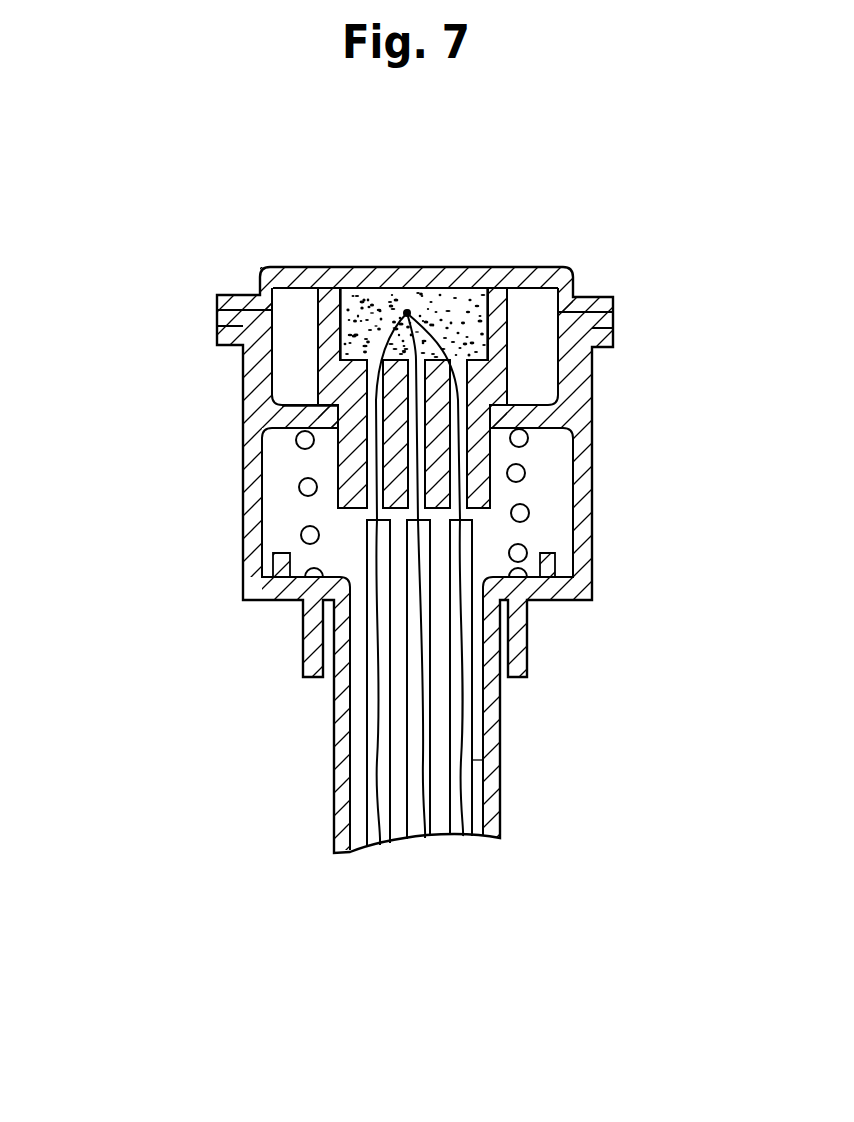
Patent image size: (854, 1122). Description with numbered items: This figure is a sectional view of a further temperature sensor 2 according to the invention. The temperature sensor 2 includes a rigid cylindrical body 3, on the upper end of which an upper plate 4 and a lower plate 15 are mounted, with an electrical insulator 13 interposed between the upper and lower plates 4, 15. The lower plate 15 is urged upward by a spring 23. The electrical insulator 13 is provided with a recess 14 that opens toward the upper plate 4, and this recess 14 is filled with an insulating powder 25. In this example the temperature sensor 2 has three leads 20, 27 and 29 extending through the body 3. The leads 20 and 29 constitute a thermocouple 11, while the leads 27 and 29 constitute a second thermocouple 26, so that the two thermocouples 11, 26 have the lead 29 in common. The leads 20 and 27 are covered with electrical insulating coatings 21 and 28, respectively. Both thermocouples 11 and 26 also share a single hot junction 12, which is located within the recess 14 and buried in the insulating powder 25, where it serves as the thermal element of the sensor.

The temperature sensor 2 is at (608, 437).
The rigid cylindrical body 3 is at (592, 538).
The upper plate 4 is at (293, 268).
The thermocouple 11 is at (427, 837).
The hot junction 12 is at (407, 313).
The electrical insulator 13 is at (500, 322).
The recess 14 is at (345, 287).
The lower plate 15 is at (297, 420).
The lead 20 is at (377, 512).
The electrical insulating coating 21 is at (372, 748).
The spring 23 is at (529, 513).
The insulating powder 25 is at (463, 300).
The thermocouple 26 is at (465, 837).
The lead 27 is at (467, 513).
The electrical insulating coating 28 is at (470, 762).
The lead 29 is at (420, 513).